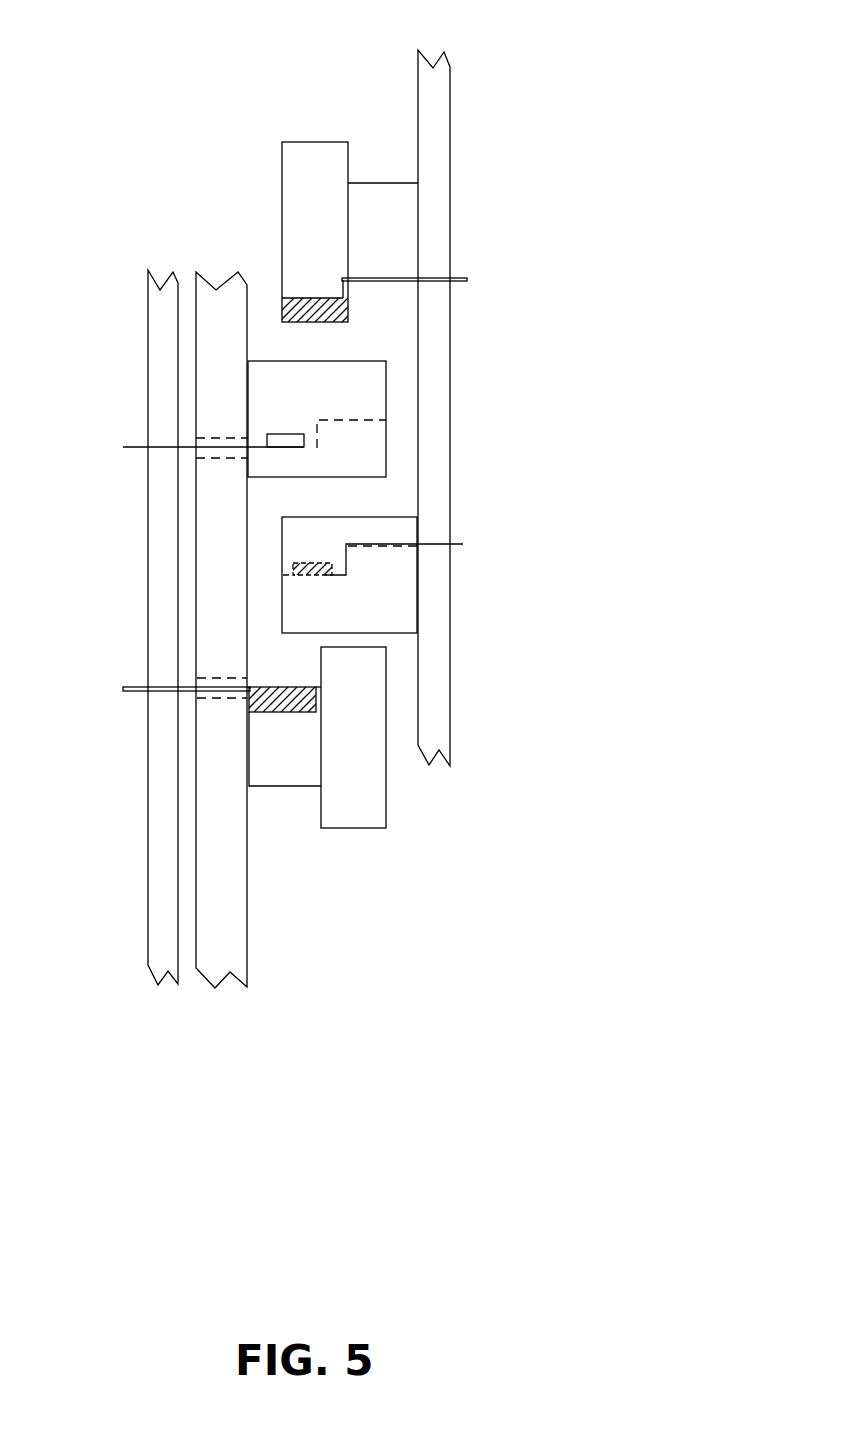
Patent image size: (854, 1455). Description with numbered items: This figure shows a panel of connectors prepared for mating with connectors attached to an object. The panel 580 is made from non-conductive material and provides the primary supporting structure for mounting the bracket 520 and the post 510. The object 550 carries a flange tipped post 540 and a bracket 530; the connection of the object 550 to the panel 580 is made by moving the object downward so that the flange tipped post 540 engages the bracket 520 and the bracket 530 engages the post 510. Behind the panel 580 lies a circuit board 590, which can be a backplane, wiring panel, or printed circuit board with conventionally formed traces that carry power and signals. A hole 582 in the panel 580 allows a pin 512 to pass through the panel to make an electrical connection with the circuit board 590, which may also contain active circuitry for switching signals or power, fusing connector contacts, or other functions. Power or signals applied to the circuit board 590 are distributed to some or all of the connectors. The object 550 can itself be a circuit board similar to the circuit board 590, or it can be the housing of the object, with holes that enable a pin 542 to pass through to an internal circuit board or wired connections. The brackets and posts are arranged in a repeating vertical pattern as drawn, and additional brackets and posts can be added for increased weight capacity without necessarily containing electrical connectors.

The post 510 is at (387, 809).
The pin 512 is at (137, 695).
The bracket 520 is at (390, 393).
The bracket 530 is at (368, 513).
The flange tipped post 540 is at (308, 135).
The pin 542 is at (467, 272).
The object 550 is at (457, 52).
The panel 580 is at (225, 280).
The hole 582 is at (227, 678).
The circuit board 590 is at (143, 293).